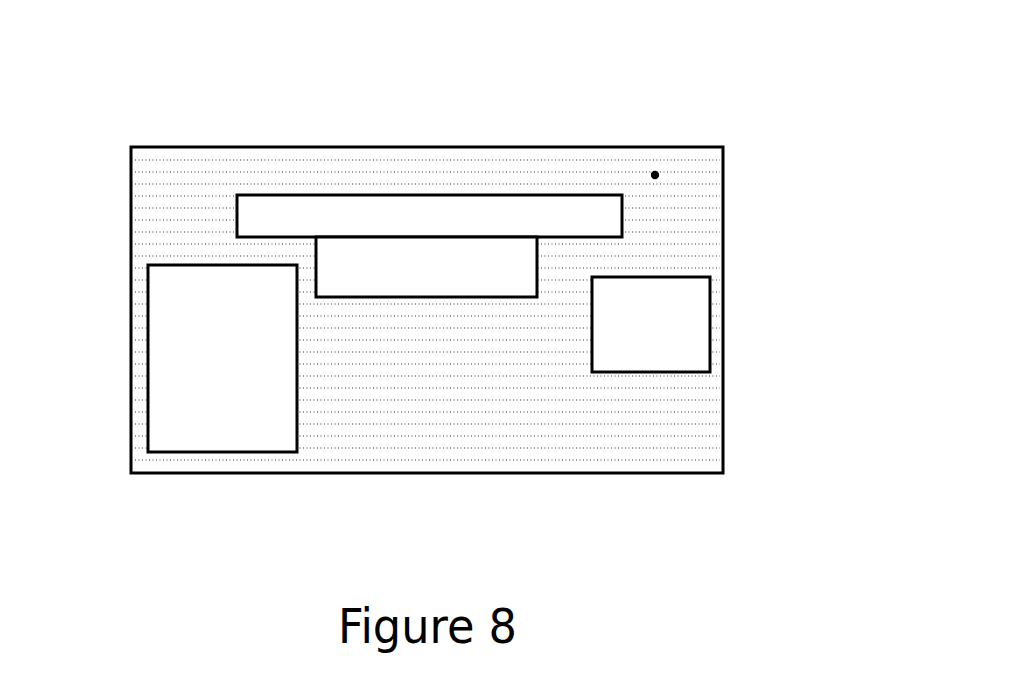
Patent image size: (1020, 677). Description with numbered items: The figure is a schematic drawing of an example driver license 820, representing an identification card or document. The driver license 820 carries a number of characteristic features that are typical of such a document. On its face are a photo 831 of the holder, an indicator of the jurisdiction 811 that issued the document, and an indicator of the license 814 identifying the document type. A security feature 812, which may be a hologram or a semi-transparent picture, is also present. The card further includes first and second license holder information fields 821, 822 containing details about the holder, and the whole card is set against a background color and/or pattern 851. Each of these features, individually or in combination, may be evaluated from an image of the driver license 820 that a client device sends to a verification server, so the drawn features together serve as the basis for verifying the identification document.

The driver license 820 is at (303, 180).
The indicator of the jurisdiction 811 is at (410, 195).
The indicator of the license 814 is at (537, 249).
The security feature 812 is at (711, 303).
The background color and/or pattern 851 is at (655, 170).
The photo 831 is at (148, 325).
The first license holder information field 821 is at (350, 370).
The second license holder information field 822 is at (583, 454).